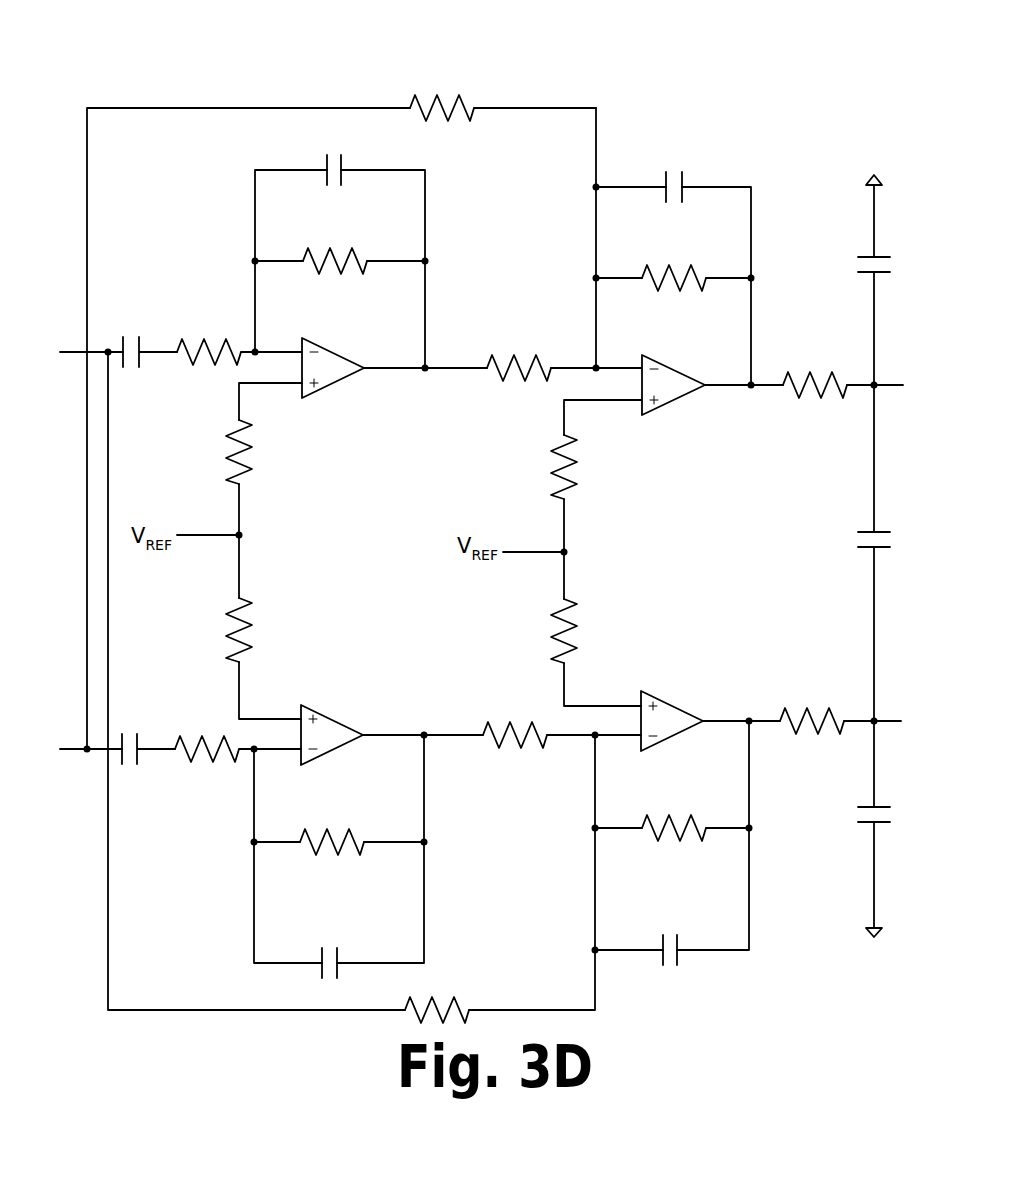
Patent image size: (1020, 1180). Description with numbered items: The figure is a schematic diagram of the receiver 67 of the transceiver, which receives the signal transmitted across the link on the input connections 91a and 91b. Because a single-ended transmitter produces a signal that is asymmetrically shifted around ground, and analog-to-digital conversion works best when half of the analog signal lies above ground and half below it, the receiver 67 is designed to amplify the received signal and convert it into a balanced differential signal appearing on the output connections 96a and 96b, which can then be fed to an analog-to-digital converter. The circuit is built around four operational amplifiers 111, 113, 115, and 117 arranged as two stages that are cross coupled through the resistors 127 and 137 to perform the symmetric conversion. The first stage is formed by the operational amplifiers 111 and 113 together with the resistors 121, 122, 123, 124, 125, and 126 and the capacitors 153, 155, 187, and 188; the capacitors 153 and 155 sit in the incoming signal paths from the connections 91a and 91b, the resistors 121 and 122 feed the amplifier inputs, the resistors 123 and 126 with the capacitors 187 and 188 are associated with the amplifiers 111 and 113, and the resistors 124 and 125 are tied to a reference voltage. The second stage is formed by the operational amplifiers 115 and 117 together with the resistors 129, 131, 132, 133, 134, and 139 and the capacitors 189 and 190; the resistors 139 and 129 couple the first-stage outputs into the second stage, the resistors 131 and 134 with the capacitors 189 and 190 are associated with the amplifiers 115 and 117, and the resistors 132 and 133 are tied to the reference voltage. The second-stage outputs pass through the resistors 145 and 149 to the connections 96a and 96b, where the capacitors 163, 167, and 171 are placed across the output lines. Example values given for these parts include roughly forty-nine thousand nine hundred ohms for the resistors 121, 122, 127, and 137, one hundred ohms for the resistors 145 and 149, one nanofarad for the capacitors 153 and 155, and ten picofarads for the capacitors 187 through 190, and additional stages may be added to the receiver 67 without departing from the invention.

The receiver 67 is at (645, 76).
The connection 91a is at (102, 347).
The connection 91b is at (65, 752).
The connection 96a is at (887, 384).
The connection 96b is at (887, 722).
The operational amplifier 111 is at (348, 374).
The operational amplifier 113 is at (348, 718).
The operational amplifier 115 is at (657, 412).
The operational amplifier 117 is at (691, 690).
The resistor 121 is at (209, 314).
The resistor 122 is at (207, 779).
The resistor 123 is at (333, 286).
The resistor 124 is at (266, 443).
The resistor 125 is at (266, 626).
The resistor 126 is at (333, 814).
The resistor 127 is at (441, 975).
The resistor 129 is at (520, 778).
The resistor 131 is at (673, 298).
The resistor 132 is at (590, 470).
The resistor 133 is at (524, 631).
The resistor 134 is at (673, 806).
The resistor 137 is at (444, 78).
The resistor 139 is at (526, 402).
The resistor 145 is at (829, 358).
The resistor 149 is at (810, 686).
The capacitor 153 is at (131, 378).
The capacitor 155 is at (131, 712).
The capacitor 163 is at (848, 264).
The capacitor 167 is at (848, 540).
The capacitor 171 is at (852, 812).
The capacitor 187 is at (333, 196).
The capacitor 188 is at (333, 934).
The capacitor 189 is at (673, 208).
The capacitor 190 is at (673, 921).